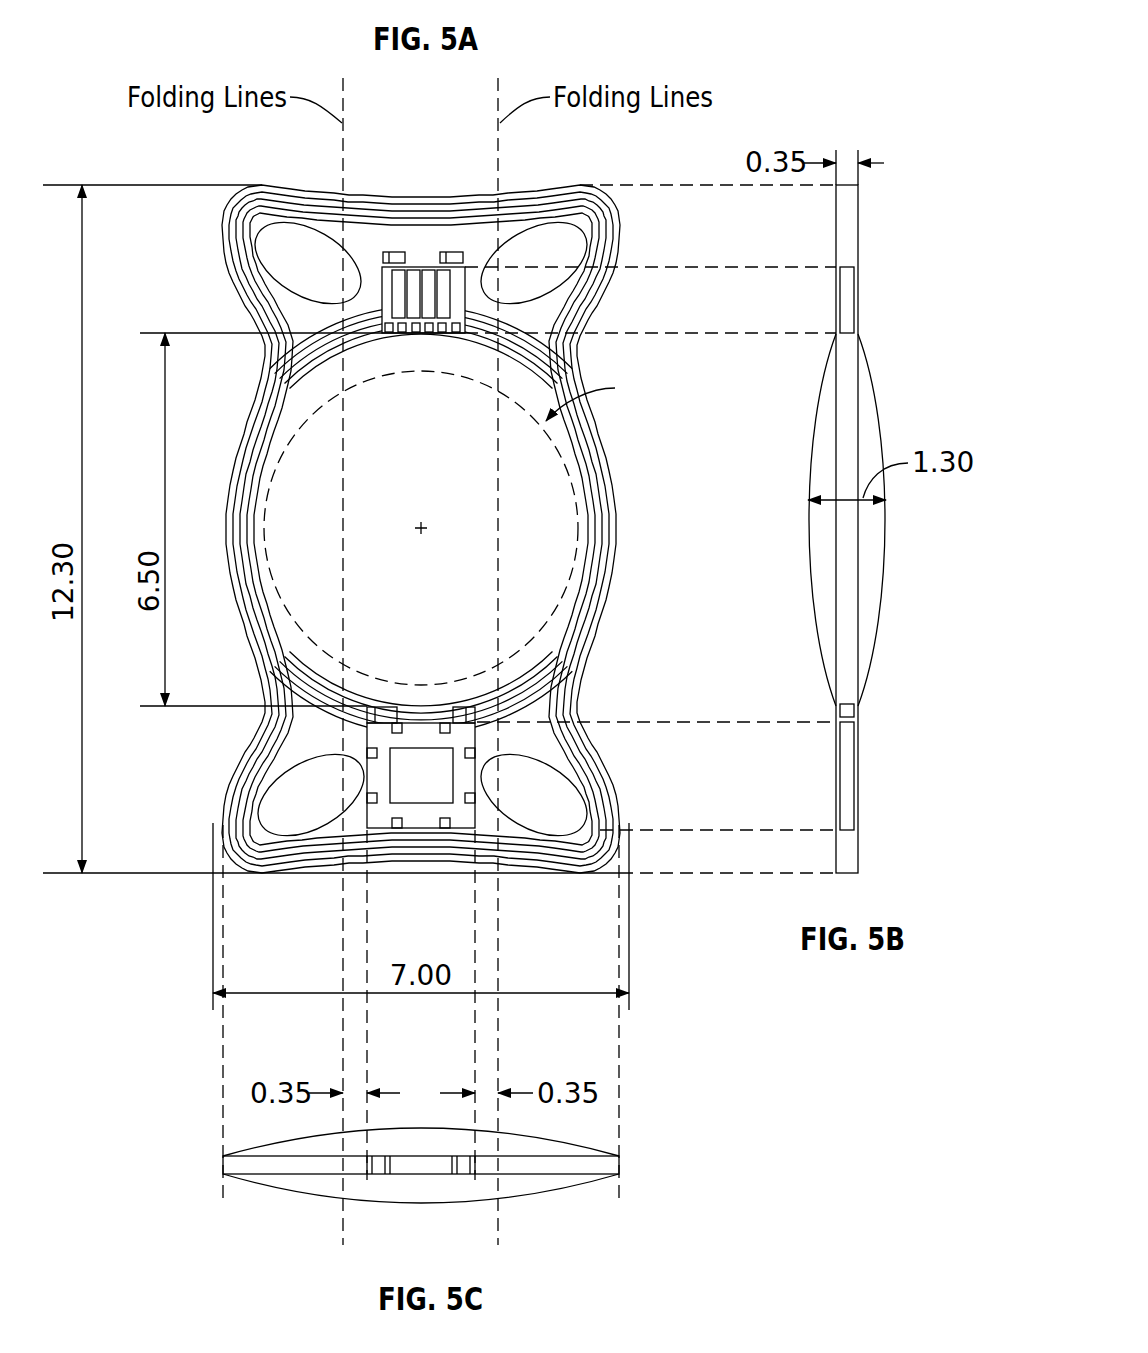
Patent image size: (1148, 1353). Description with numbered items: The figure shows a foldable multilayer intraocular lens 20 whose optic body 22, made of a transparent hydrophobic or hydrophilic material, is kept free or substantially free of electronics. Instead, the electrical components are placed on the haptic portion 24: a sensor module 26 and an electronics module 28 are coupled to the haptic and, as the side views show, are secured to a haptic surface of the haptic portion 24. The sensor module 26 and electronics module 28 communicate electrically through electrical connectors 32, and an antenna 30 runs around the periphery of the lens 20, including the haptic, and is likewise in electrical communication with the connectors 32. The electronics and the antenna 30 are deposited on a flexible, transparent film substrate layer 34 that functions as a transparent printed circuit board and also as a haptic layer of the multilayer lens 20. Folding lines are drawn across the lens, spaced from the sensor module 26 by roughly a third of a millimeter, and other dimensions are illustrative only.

In FIG. 5A, the foldable multilayer intraocular lens 20 is at (128, 42).
In FIG. 5A, the optic body 22 is at (307, 460).
In FIG. 5B, the optic body 22 is at (881, 396).
In FIG. 5B, the haptic portion 24 is at (887, 216).
In FIG. 5A, the sensor module 26 is at (378, 780).
In FIG. 5A, the electronics module 28 is at (424, 258).
In FIG. 5A, the antenna 30 is at (268, 181).
In FIG. 5A, the electrical connectors 32 is at (542, 330).
In FIG. 5A, the flexible transparent film substrate layer 34 is at (290, 297).